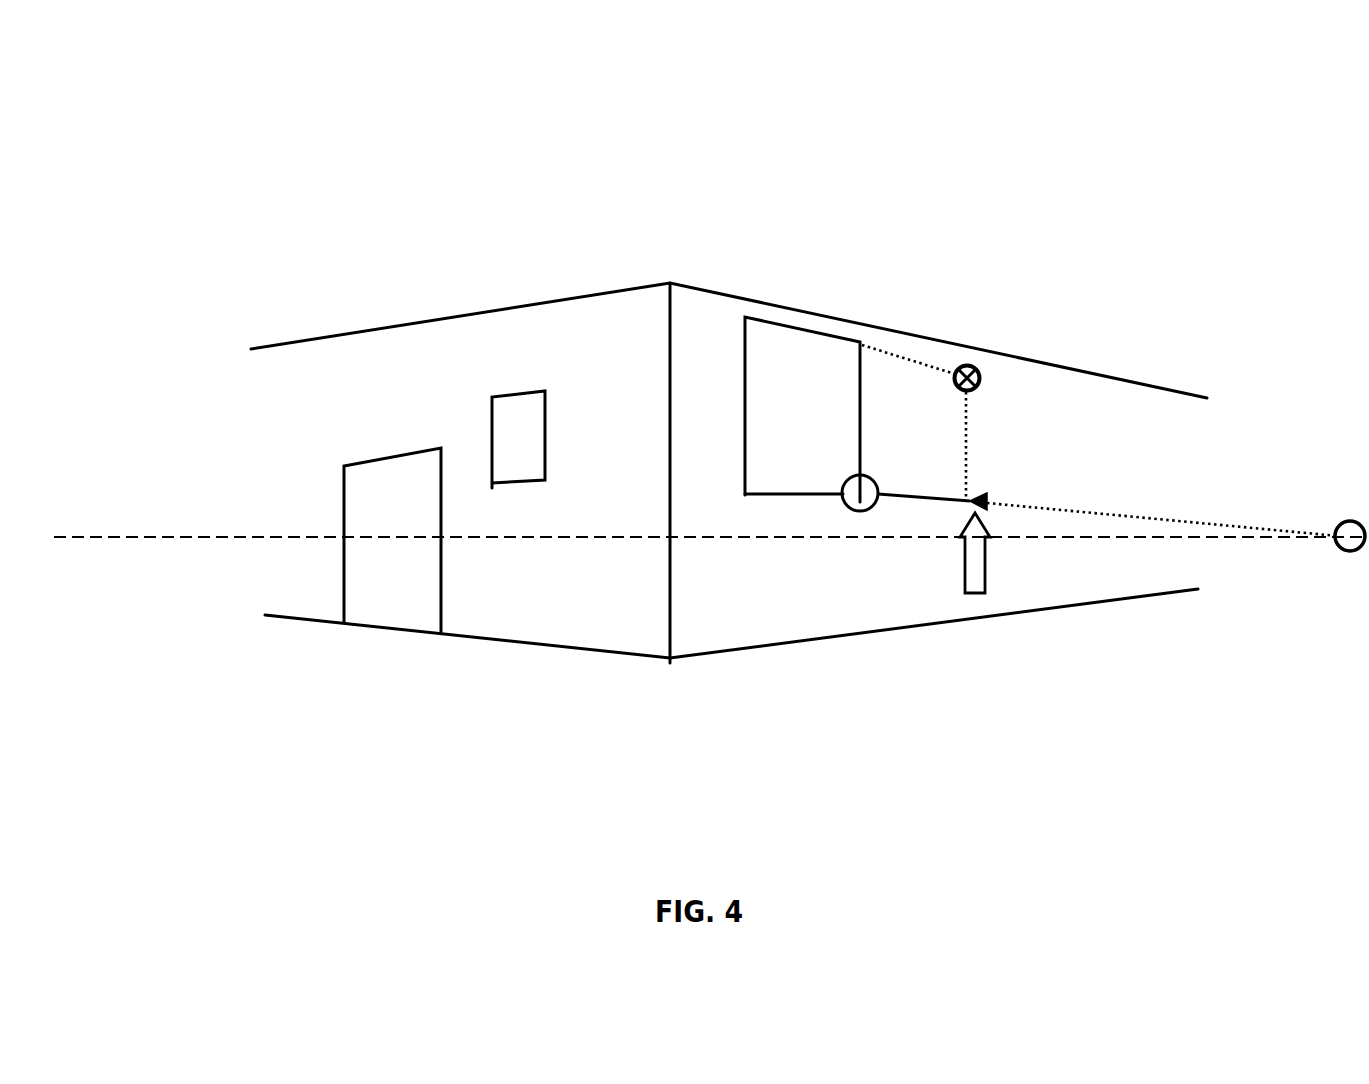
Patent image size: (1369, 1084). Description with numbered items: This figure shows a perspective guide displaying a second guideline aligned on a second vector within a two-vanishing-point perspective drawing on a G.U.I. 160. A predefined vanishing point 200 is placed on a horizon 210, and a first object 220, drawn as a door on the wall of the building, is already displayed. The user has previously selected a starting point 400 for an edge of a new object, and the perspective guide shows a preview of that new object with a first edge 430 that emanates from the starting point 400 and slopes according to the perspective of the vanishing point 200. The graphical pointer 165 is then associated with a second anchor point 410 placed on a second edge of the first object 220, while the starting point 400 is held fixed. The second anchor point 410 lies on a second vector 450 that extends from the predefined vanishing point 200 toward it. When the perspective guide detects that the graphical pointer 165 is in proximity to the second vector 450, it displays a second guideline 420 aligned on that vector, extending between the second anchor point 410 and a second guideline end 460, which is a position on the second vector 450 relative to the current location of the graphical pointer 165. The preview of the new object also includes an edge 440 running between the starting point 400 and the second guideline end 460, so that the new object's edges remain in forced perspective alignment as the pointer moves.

The G.U.I. 160 is at (238, 138).
The graphical pointer 165 is at (985, 563).
The predefined vanishing point 200 is at (1343, 520).
The horizon 210 is at (111, 538).
The first object 220 is at (745, 377).
The starting point 400 is at (968, 390).
The second anchor point 410 is at (863, 478).
The second guideline 420 is at (925, 497).
The edge 430 is at (937, 368).
The edge 440 is at (970, 452).
The second vector 450 is at (1243, 527).
The second guideline end 460 is at (992, 503).